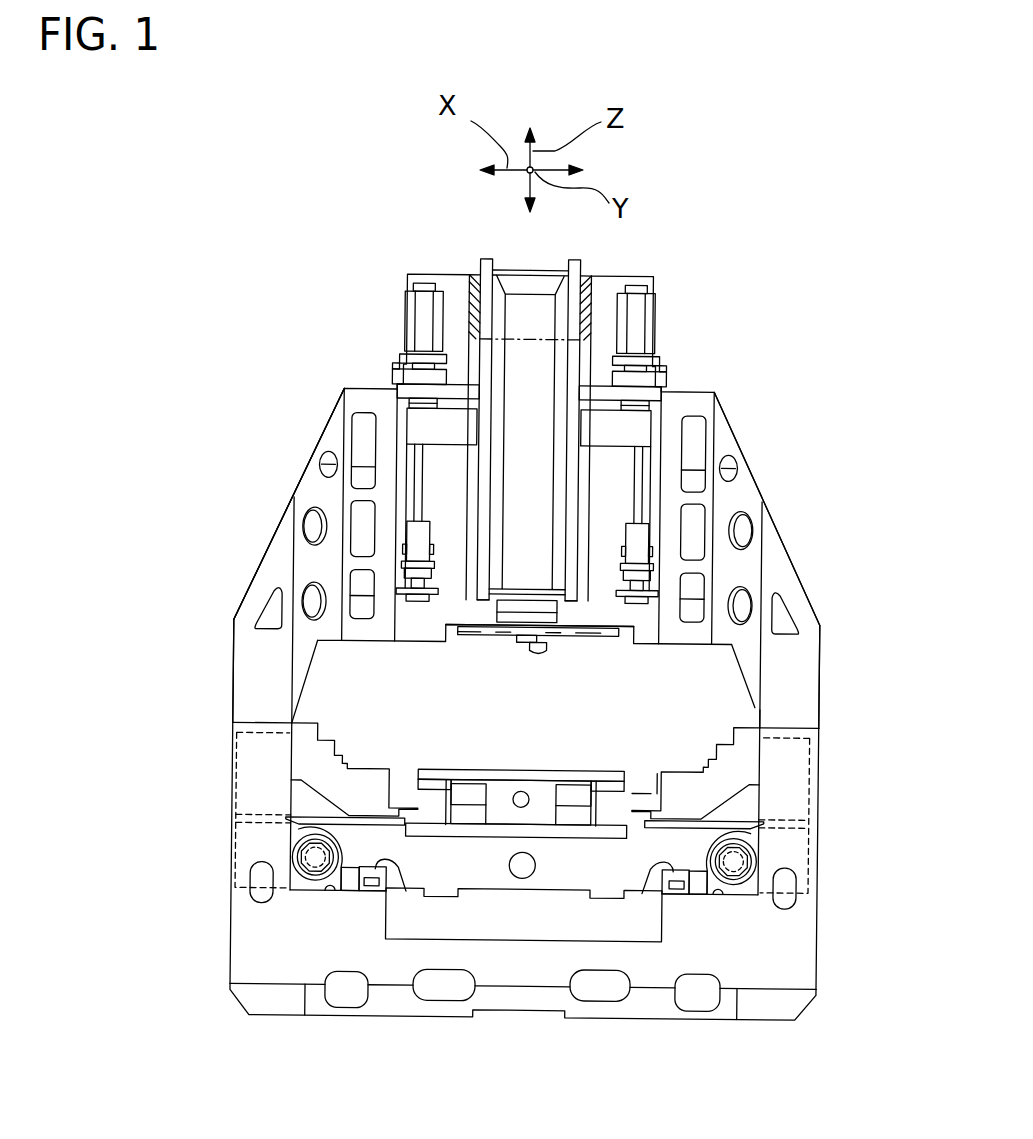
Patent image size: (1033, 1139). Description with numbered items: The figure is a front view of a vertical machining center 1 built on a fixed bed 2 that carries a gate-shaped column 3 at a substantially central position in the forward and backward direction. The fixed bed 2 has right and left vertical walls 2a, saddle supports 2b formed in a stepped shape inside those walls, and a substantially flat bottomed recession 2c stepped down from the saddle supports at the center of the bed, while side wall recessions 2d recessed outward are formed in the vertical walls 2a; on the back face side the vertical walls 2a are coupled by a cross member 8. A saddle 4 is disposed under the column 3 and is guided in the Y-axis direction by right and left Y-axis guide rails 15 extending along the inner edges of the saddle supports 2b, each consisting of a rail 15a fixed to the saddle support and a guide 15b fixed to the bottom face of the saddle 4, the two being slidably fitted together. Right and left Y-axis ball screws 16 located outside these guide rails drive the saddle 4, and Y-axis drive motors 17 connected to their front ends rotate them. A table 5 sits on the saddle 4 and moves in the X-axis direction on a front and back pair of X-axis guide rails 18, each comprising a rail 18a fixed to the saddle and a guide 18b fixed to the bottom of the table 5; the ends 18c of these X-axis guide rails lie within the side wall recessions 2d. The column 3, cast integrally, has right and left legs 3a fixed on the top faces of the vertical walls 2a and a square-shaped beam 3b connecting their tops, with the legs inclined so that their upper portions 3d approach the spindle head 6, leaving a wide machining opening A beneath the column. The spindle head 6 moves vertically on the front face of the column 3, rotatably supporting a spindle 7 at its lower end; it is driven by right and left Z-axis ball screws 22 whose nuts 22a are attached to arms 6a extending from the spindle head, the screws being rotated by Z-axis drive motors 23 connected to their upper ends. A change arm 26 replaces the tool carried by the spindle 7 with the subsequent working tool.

The vertical machining center 1 is at (268, 424).
The fixed bed 2 is at (519, 886).
The vertical walls 2a is at (820, 766).
The saddle supports 2b is at (720, 892).
The bottomed recession 2c is at (540, 927).
The side wall recessions 2d is at (806, 784).
The column 3 is at (270, 534).
The legs 3a is at (819, 646).
The beam 3b is at (578, 620).
The upper portions of the legs 3d is at (755, 465).
The saddle 4 is at (522, 892).
The table 5 is at (433, 770).
The spindle head 6 is at (504, 641).
The arms 6a is at (642, 425).
The spindle 7 is at (517, 667).
The cross member 8 is at (680, 762).
The Y-axis guide rails 15 is at (523, 905).
The rail 15a is at (375, 892).
The guide 15b is at (388, 868).
The Y-axis ball screws 16 is at (755, 857).
The Y-axis drive motors 17 is at (732, 886).
The X-axis guide rails 18 is at (533, 753).
The rail 18a is at (363, 817).
The guide 18b is at (408, 815).
The ends of the X-axis guide rails 18c is at (787, 824).
The Z-axis ball screws 22 is at (637, 477).
The nuts 22a is at (612, 397).
The Z-axis drive motors 23 is at (655, 320).
The change arm 26 is at (563, 633).
The machining opening A is at (723, 667).